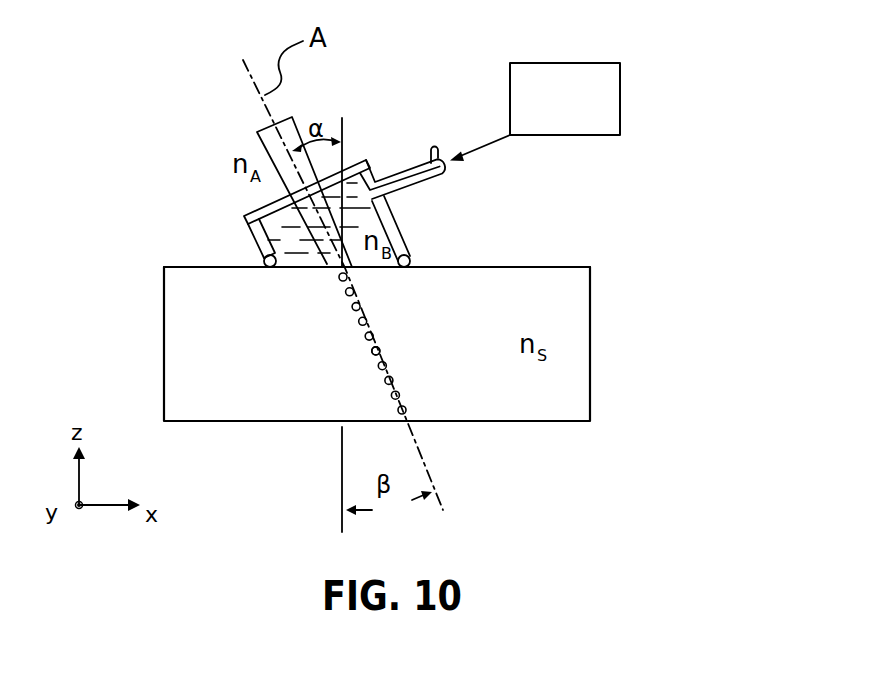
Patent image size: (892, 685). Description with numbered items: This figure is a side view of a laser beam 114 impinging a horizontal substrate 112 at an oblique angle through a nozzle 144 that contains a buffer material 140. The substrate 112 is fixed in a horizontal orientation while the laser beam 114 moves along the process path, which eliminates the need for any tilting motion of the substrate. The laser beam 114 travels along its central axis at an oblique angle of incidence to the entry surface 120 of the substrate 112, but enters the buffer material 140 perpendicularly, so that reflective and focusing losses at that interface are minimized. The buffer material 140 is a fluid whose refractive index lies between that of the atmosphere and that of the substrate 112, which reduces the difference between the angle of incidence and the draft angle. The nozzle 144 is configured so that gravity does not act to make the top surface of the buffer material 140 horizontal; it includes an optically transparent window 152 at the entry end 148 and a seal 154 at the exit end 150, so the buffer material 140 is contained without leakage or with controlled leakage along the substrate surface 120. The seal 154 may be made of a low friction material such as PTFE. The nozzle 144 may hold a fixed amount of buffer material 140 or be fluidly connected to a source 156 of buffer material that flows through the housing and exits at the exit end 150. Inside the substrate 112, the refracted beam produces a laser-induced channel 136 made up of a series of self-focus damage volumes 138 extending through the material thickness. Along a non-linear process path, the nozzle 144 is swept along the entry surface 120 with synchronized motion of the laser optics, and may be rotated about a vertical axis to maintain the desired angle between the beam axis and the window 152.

The substrate 112 is at (590, 305).
The laser beam 114 is at (258, 135).
The entry surface 120 is at (575, 267).
The laser-induced channel 136 is at (333, 287).
The self-focus damage volume 138 is at (377, 348).
The buffer material 140 is at (363, 163).
The nozzle 144 is at (398, 230).
The entry end 148 is at (247, 227).
The exit end 150 is at (265, 263).
The optically transparent window 152 is at (268, 204).
The seal 154 is at (272, 268).
The source of buffer material 156 is at (535, 112).